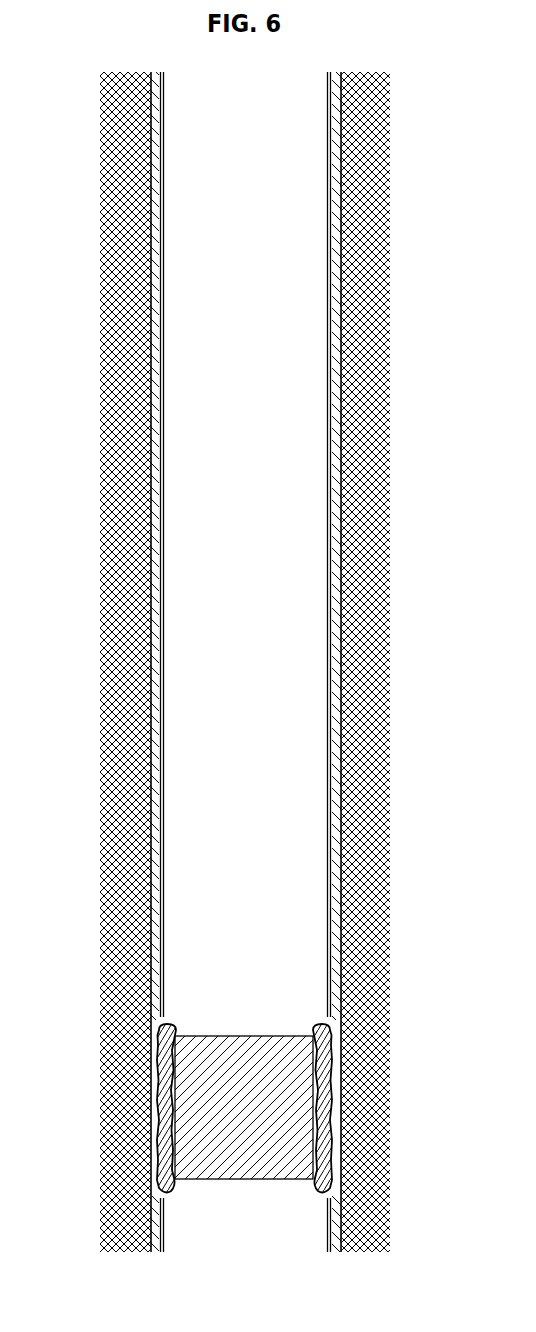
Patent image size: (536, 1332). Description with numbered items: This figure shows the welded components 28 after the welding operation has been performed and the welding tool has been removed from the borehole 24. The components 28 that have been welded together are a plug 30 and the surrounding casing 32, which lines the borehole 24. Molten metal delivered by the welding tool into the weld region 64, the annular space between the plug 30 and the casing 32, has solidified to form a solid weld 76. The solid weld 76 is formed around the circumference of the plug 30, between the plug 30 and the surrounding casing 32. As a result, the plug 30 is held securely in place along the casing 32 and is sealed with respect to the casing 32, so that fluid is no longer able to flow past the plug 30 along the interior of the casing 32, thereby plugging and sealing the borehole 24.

The borehole 24 is at (177, 288).
The casing 32 is at (341, 871).
The plug 30 is at (256, 1119).
The weld region 64 is at (110, 1108).
The solid weld 76 is at (165, 1130).
The components 28 is at (341, 1095).